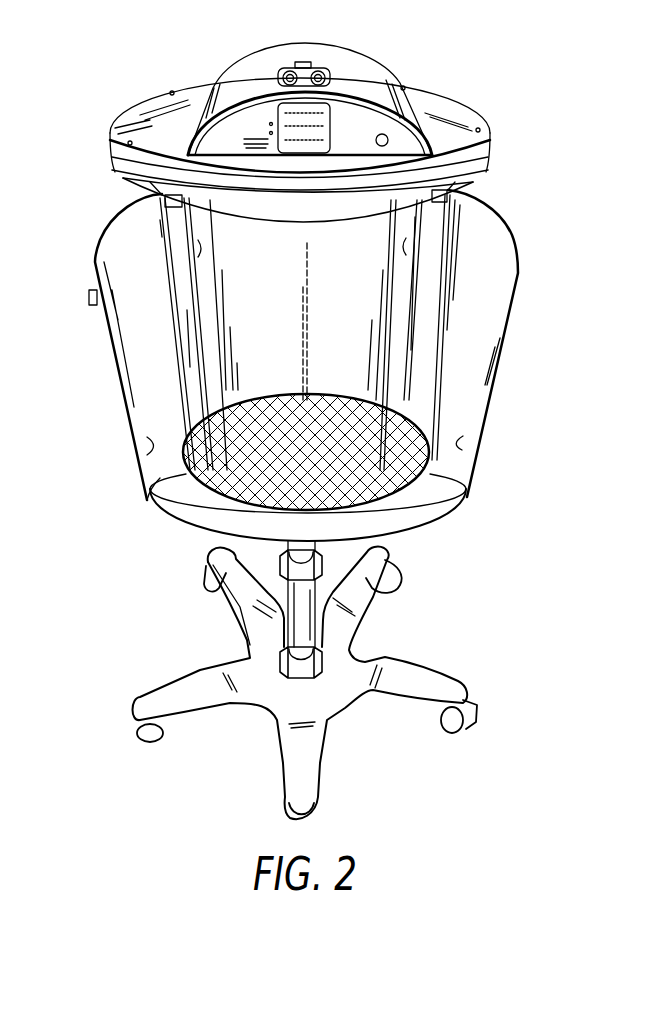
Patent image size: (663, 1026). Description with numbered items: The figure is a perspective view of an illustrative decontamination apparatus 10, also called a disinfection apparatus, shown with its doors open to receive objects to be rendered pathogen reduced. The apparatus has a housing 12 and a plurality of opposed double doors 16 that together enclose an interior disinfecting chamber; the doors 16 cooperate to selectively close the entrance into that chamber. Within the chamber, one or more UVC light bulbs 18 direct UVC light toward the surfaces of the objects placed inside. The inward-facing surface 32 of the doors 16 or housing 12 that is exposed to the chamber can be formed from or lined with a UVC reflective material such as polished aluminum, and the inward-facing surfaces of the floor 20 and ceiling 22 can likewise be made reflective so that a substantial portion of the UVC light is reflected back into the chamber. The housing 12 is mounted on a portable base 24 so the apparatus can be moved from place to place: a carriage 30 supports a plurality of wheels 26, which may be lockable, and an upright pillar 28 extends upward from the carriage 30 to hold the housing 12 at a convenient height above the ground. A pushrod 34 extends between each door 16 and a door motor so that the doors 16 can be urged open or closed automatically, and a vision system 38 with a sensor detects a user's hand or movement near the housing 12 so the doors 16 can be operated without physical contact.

The decontamination apparatus 10 is at (472, 52).
The housing 12 is at (109, 146).
The doors 16 is at (114, 367).
The UVC light bulbs 18 is at (198, 256).
The floor 20 is at (363, 474).
The ceiling 22 is at (473, 207).
The portable base 24 is at (356, 632).
The wheels 26 is at (478, 709).
The upright pillars 28 is at (300, 620).
The carriage 30 is at (287, 703).
The inward-facing surface 32 is at (148, 449).
The pushrod 34 is at (128, 214).
The vision system 38 is at (320, 68).